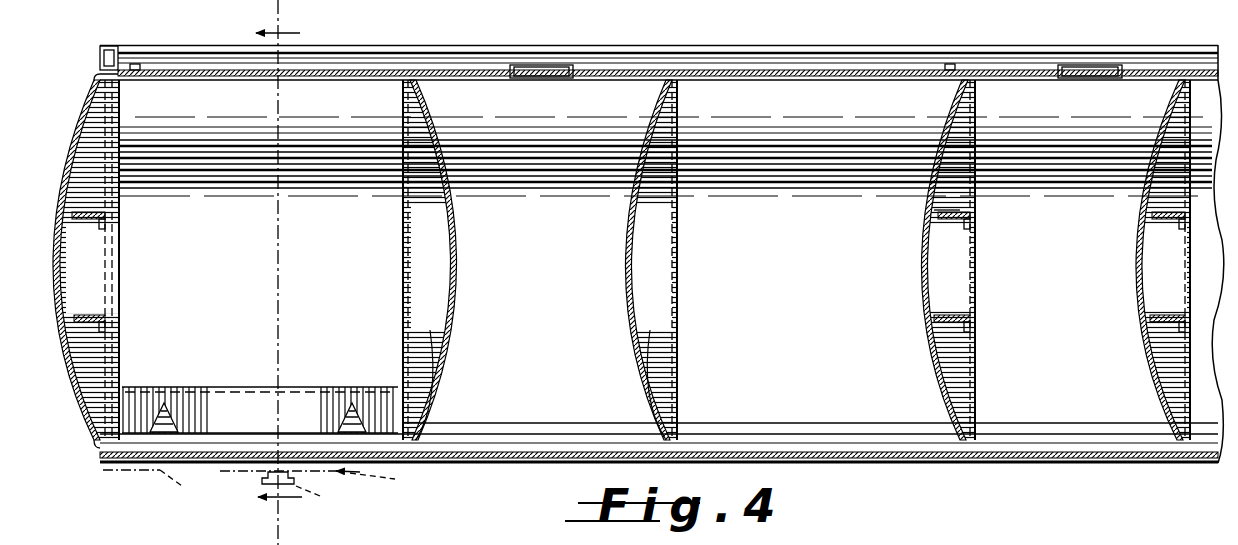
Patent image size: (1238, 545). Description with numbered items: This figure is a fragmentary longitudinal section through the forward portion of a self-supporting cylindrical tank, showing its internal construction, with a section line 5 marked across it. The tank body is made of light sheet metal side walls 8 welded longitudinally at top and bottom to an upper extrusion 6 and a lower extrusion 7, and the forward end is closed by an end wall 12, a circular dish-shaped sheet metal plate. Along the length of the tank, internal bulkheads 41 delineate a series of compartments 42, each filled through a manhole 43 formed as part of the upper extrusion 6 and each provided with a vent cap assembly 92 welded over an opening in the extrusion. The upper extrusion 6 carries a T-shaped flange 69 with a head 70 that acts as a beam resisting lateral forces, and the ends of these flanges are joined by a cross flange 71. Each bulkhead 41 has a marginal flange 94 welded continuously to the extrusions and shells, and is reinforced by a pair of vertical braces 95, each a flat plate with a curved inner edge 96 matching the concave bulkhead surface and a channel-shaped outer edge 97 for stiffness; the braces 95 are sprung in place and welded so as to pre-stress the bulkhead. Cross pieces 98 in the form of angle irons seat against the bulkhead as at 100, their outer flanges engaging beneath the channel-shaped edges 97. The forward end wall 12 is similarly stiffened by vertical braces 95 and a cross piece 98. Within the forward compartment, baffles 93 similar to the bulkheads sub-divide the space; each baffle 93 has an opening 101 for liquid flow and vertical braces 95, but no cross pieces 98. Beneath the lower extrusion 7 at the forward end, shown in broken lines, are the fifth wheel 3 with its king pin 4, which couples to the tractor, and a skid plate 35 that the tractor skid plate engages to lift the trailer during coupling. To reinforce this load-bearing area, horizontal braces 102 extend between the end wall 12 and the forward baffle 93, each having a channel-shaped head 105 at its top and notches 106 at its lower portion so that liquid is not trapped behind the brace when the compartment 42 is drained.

The fifth wheel 3 is at (318, 477).
The king pin 4 is at (300, 489).
The section line 5 is at (279, 272).
The upper extrusion 6 is at (735, 66).
The lower extrusion 7 is at (892, 464).
The side walls 8 is at (549, 287).
The forward end wall 12 is at (88, 120).
The skid plate 35 is at (154, 483).
The internal bulkhead 41 is at (928, 270).
The compartment 42 is at (822, 98).
The manhole 43 is at (540, 66).
The T-shaped flange 69 is at (600, 64).
The head 70 is at (676, 45).
The cross flange 71 is at (104, 58).
The vent cap assembly 92 is at (135, 66).
The internal baffle 93 is at (456, 236).
The marginal flange 94 is at (385, 78).
The vertical brace 95 is at (110, 250).
The curved inner edge 96 is at (70, 268).
The channel-shaped outer edge 97 is at (125, 335).
The cross piece 98 is at (110, 213).
The cross piece seat 100 is at (932, 212).
The baffle opening 101 is at (445, 322).
The horizontal brace 102 is at (258, 415).
The channel-shaped head 105 is at (225, 390).
The notch 106 is at (160, 422).